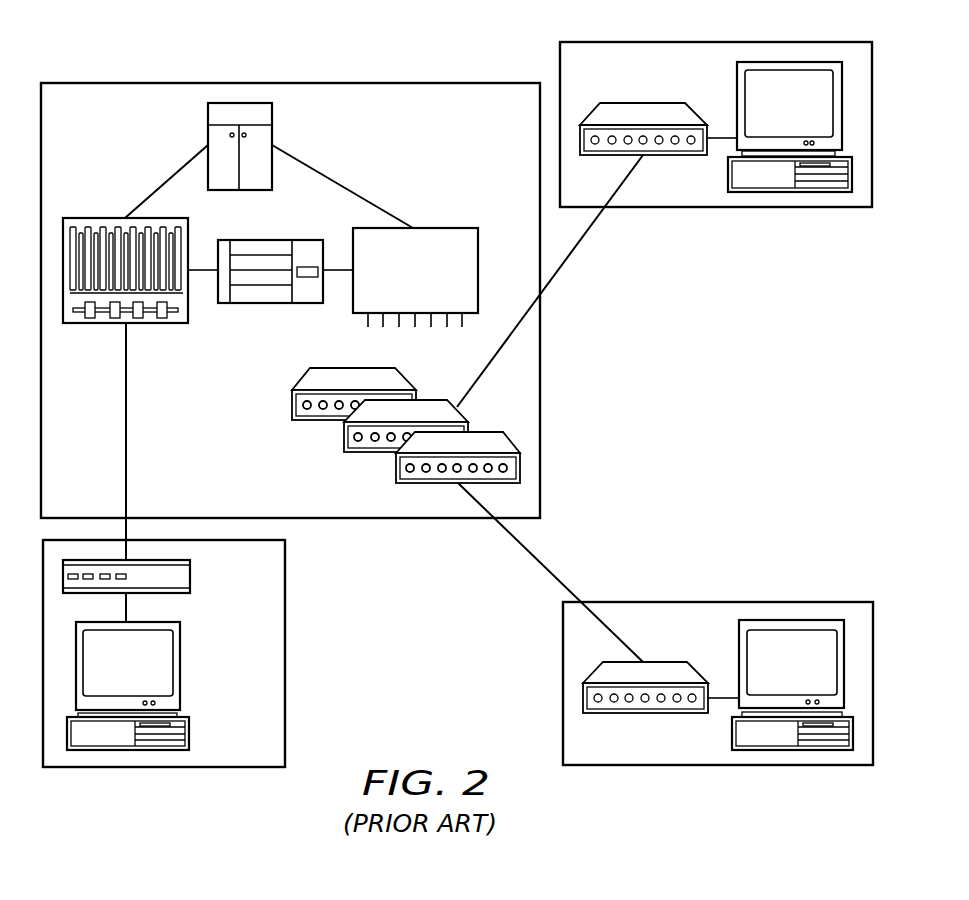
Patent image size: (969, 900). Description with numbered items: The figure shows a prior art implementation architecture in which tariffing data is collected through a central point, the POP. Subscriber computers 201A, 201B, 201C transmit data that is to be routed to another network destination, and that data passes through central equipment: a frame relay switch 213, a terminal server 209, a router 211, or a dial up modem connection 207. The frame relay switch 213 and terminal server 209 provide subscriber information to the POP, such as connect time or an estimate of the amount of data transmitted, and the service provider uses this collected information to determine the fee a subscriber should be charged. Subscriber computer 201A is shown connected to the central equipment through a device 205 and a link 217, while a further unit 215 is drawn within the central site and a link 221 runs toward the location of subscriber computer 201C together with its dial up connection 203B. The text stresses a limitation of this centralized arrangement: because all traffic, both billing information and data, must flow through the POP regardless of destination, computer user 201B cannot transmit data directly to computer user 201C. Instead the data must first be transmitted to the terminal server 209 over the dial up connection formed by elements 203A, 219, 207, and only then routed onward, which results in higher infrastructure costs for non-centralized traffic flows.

The subscriber computer 201A is at (189, 737).
The subscriber computer 201B is at (732, 727).
The subscriber computer 201C is at (728, 172).
The dial up connection 203A is at (667, 662).
The dial up connection 203B is at (643, 103).
The network interface device 205 is at (192, 575).
The dial up modem connection 207 is at (397, 435).
The terminal server 209 is at (436, 284).
The router 211 is at (273, 303).
The frame relay switch 213 is at (93, 218).
The storage cabinet 215 is at (208, 135).
The link 217 is at (126, 415).
The dial up connection 219 is at (552, 570).
The link 221 is at (572, 255).